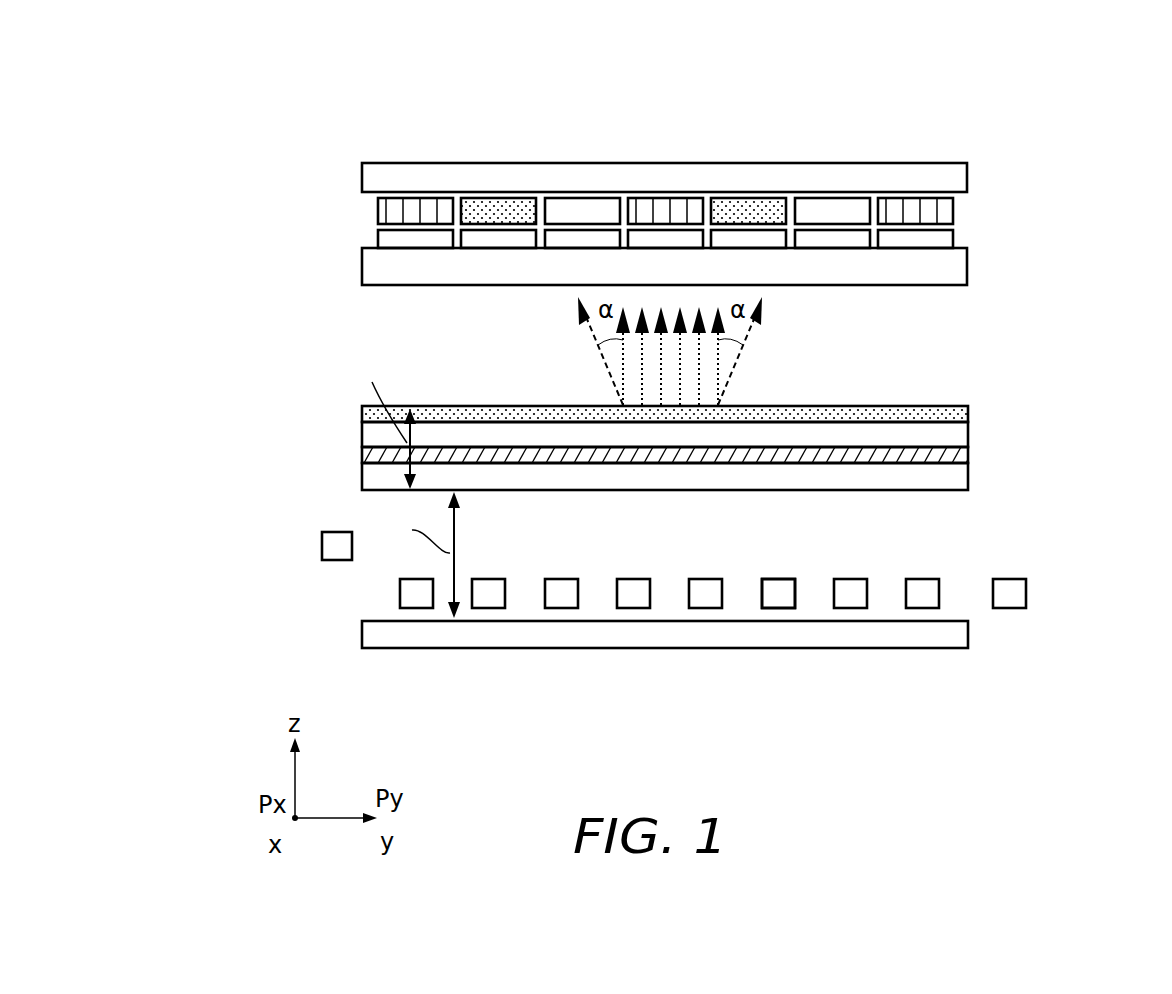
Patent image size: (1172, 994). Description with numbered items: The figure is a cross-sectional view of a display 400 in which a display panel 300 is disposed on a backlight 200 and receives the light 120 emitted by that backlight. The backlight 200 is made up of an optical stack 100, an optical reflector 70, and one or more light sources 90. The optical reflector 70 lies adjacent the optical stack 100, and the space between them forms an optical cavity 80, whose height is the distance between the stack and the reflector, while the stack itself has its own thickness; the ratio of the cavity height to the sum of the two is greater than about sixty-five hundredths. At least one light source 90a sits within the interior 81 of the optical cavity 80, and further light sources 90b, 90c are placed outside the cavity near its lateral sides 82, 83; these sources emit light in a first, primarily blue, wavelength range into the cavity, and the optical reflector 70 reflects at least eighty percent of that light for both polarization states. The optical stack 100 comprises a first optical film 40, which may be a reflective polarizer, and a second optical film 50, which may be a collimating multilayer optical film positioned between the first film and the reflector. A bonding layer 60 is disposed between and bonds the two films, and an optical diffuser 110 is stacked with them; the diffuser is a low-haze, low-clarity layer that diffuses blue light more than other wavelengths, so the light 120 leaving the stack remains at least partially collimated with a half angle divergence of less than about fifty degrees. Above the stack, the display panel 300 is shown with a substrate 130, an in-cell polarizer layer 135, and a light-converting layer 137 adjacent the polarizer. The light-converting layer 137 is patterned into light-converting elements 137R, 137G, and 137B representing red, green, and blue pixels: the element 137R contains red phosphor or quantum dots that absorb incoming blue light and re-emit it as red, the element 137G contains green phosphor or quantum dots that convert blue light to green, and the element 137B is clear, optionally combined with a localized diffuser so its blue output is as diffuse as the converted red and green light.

The display 400 is at (955, 55).
The display panel 300 is at (338, 201).
The upper substrate 130 is at (362, 175).
The light-converting layer 137 is at (1022, 198).
The light-converting element 137R is at (410, 205).
The light-converting element 137G is at (480, 205).
The light-converting element 137B is at (610, 205).
The in-cell polarizer layer 135 is at (953, 232).
The light 120 is at (781, 368).
The backlight 200 is at (243, 400).
The optical stack 100 is at (337, 405).
The optical diffuser 110 is at (970, 408).
The first optical film 40 is at (953, 437).
The bonding layer 60 is at (968, 453).
The second optical film 50 is at (950, 478).
The optical cavity 80 is at (980, 558).
The optical reflector 70 is at (968, 636).
The light source 90 is at (495, 595).
The light source 90a is at (778, 598).
The light source 90b is at (1027, 592).
The light source 90c is at (320, 548).
The interior 81 is at (597, 598).
The lateral side 82 is at (965, 528).
The lateral side 83 is at (372, 588).